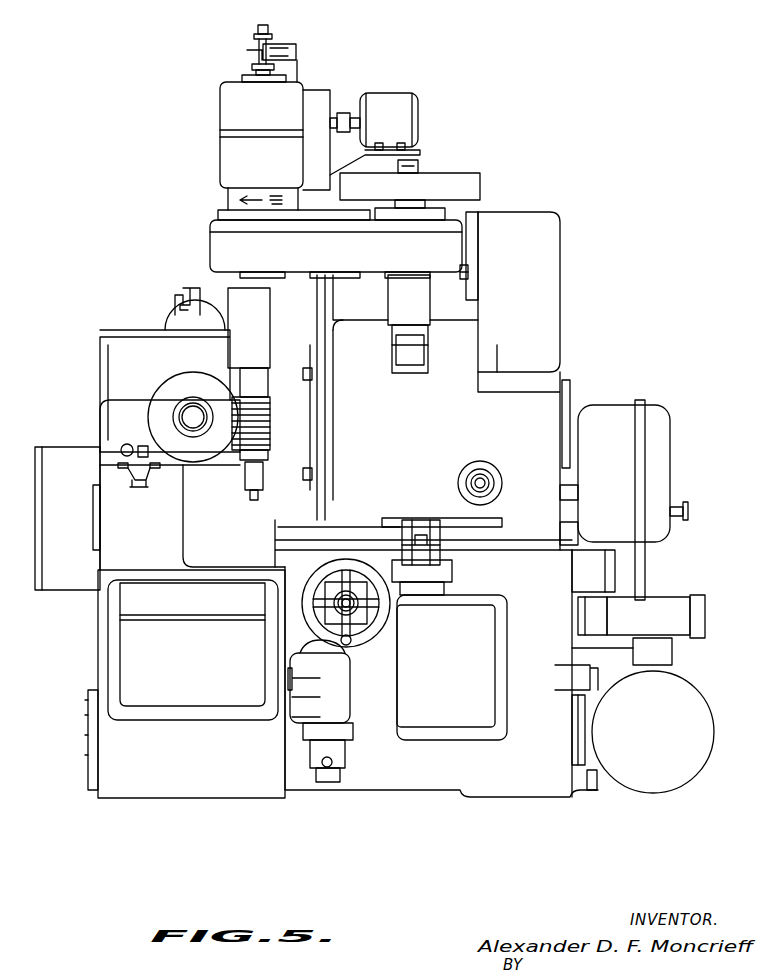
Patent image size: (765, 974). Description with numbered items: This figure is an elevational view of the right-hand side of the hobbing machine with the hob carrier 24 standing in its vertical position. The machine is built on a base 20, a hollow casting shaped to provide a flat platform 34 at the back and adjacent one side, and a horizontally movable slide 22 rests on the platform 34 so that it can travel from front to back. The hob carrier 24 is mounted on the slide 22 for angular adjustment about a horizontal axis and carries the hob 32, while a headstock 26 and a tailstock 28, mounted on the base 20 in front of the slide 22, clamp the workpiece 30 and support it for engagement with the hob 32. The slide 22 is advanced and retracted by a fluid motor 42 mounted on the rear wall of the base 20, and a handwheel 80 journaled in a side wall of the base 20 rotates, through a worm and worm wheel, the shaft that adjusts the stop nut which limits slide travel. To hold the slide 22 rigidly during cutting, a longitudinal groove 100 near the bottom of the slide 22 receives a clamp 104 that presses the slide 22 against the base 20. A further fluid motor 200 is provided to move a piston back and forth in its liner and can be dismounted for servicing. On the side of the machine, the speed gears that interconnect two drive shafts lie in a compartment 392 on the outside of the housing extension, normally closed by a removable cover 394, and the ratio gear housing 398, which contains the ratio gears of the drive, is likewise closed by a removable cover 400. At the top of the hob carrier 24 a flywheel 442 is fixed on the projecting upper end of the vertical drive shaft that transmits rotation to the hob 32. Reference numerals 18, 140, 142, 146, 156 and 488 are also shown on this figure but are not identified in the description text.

The motor 18 is at (244, 66).
The base 20 is at (458, 783).
The slide 22 is at (543, 398).
The hob carrier 24 is at (228, 283).
The headstock 26 is at (112, 358).
The tailstock 28 is at (108, 428).
The workpiece 30 is at (200, 400).
The hob 32 is at (270, 430).
The platform 34 is at (516, 548).
The fluid motor 42 is at (678, 600).
The handwheel 80 is at (330, 574).
The longitudinal groove 100 is at (470, 526).
The clamp 104 is at (428, 514).
The bracket 140 is at (475, 228).
The cover 142 is at (550, 258).
The screw 146 is at (469, 272).
The dial 156 is at (490, 480).
The fluid motor 200 is at (173, 418).
The compartment 392 is at (85, 546).
The removable cover 394 is at (40, 450).
The ratio gear housing 398 is at (622, 410).
The removable cover 400 is at (660, 482).
The flywheel 442 is at (462, 190).
The bolt 488 is at (266, 30).